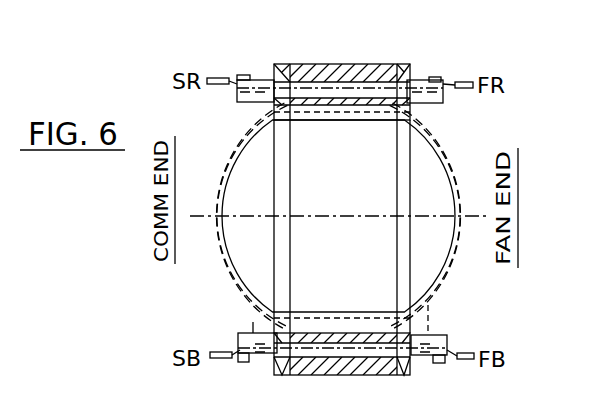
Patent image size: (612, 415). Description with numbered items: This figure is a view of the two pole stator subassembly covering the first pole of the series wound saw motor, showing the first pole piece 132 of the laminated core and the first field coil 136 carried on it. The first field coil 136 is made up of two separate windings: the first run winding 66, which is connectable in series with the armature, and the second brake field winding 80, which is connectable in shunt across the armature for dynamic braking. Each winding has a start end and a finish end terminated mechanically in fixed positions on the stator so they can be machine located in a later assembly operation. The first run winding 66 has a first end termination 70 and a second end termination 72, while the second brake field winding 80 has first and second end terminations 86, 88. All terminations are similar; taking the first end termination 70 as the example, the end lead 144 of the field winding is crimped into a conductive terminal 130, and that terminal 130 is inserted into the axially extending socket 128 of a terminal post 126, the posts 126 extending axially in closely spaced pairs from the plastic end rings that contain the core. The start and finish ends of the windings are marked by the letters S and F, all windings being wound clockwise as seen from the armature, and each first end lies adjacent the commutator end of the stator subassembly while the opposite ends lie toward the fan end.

The first run winding 66 is at (229, 271).
The first end termination of the first run winding 70 is at (234, 72).
The second end termination of the first run winding 72 is at (436, 72).
The second brake field winding 80 is at (213, 262).
The first end termination of the second brake field winding 86 is at (232, 365).
The second end termination of the second brake field winding 88 is at (449, 367).
The terminal post 126 is at (258, 79).
The axially extending socket 128 is at (235, 95).
The conductive terminal 130 is at (233, 77).
The first pole piece 132 is at (358, 201).
The first field coil 136 is at (461, 138).
The end lead 144 is at (273, 102).